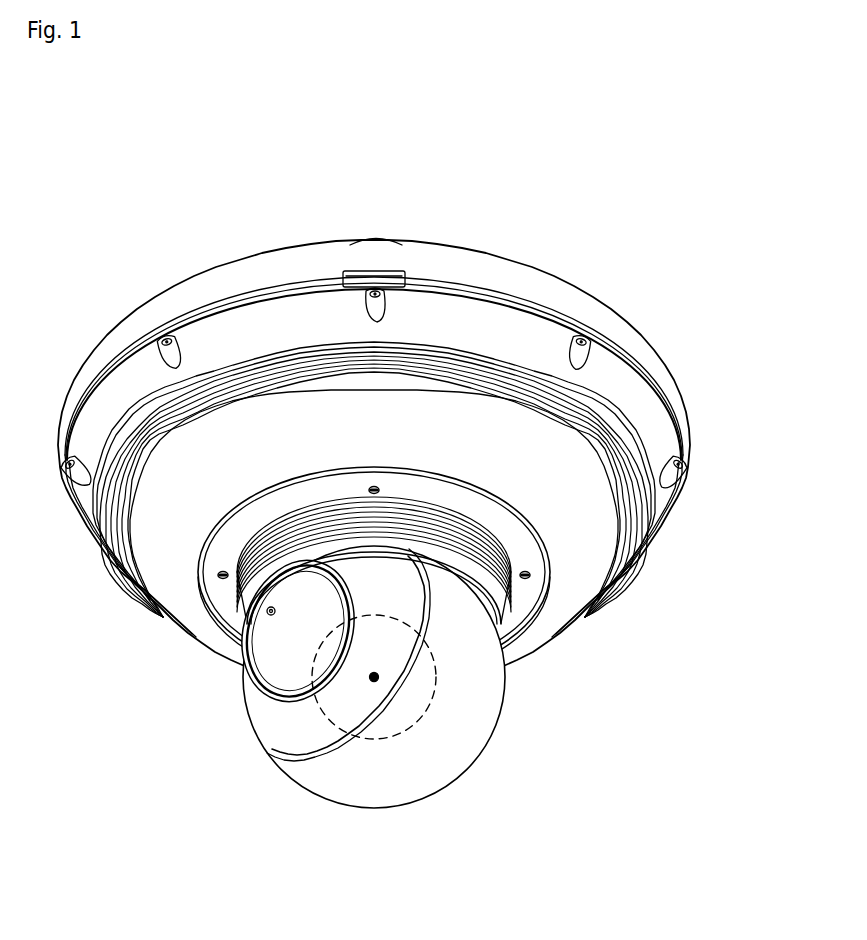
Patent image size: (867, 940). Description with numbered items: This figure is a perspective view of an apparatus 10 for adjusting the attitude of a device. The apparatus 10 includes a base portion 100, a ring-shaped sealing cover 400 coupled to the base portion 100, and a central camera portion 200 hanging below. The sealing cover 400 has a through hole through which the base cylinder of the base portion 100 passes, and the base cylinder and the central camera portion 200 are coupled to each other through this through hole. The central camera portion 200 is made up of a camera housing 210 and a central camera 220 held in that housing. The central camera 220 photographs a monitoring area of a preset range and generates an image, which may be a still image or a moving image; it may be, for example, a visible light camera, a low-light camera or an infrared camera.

The apparatus for adjusting an attitude 10 is at (389, 101).
The base portion 100 is at (588, 293).
The sealing cover 400 is at (560, 633).
The central camera portion 200 is at (493, 867).
The camera housing 210 is at (496, 731).
The central camera 220 is at (390, 737).